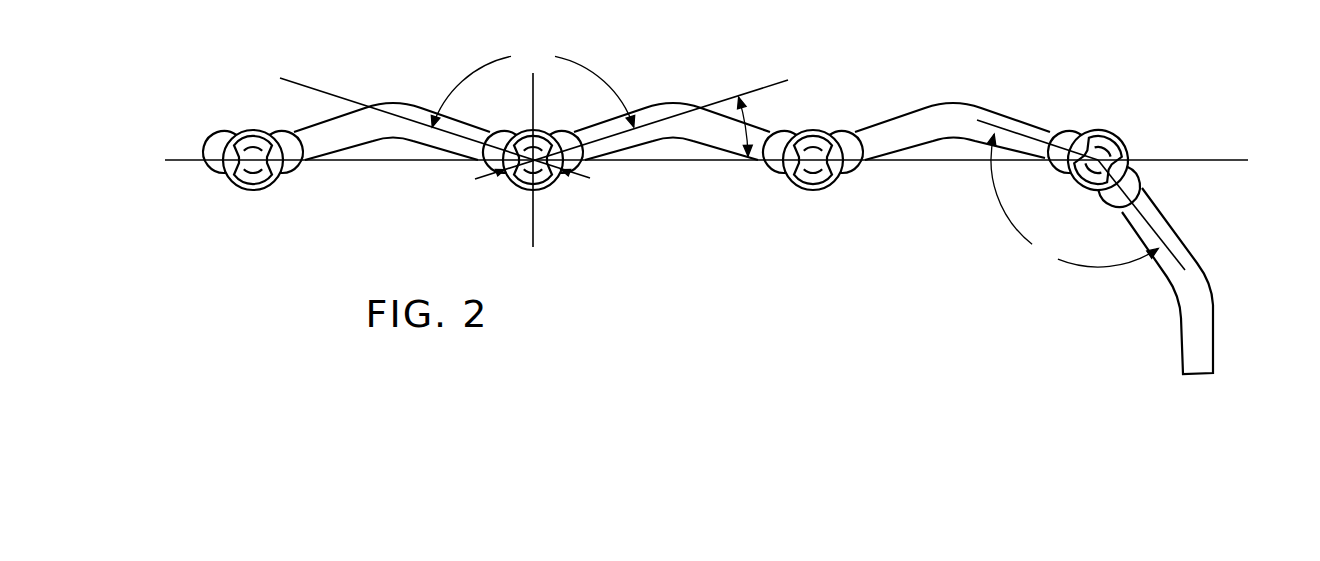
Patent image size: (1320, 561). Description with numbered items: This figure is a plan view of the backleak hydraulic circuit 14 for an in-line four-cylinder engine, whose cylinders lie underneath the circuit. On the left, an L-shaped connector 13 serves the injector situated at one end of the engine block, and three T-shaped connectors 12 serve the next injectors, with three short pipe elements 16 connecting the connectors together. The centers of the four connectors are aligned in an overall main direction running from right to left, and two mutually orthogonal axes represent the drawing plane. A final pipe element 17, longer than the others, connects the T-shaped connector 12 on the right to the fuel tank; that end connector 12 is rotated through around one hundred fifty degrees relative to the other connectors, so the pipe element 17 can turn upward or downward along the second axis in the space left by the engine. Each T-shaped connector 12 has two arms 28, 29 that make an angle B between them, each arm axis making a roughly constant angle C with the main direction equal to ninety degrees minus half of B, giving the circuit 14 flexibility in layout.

The T-shaped connector 12 is at (827, 193).
The L-shaped connector 13 is at (237, 193).
The hydraulic circuit 14 is at (223, 100).
The short pipe element 16 is at (655, 107).
The final pipe element 17 is at (1178, 235).
The arm 28 is at (322, 90).
The arm 29 is at (713, 105).